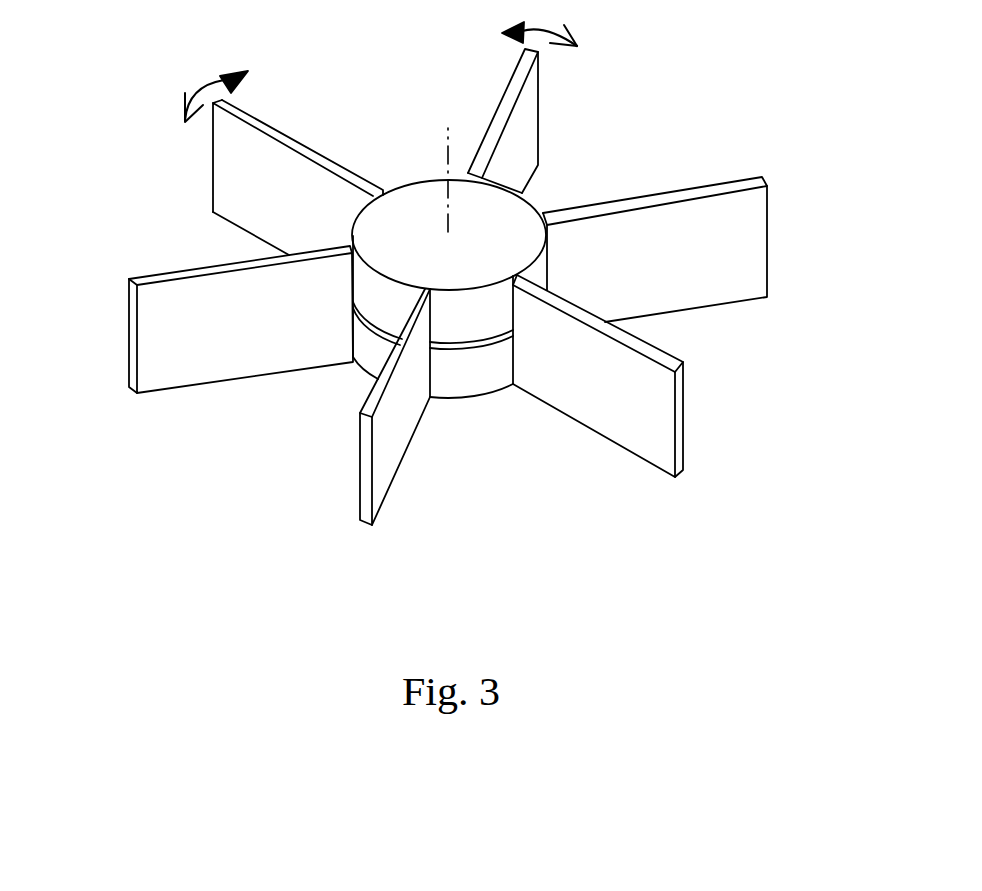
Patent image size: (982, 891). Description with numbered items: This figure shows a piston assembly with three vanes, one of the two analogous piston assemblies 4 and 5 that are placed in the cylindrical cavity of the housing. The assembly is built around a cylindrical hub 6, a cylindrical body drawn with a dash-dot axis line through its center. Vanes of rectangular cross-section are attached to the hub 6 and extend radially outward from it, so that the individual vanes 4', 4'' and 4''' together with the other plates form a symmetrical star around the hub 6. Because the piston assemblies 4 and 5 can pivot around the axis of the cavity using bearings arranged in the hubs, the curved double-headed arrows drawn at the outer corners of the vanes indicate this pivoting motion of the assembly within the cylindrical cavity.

The piston assembly 4 is at (216, 147).
The vane of piston assembly 4' is at (216, 177).
The vane of piston assembly 4'' is at (697, 249).
The vane of piston assembly 4''' is at (613, 419).
The piston assembly 5 is at (538, 52).
The cylindrical hub 6 is at (380, 292).